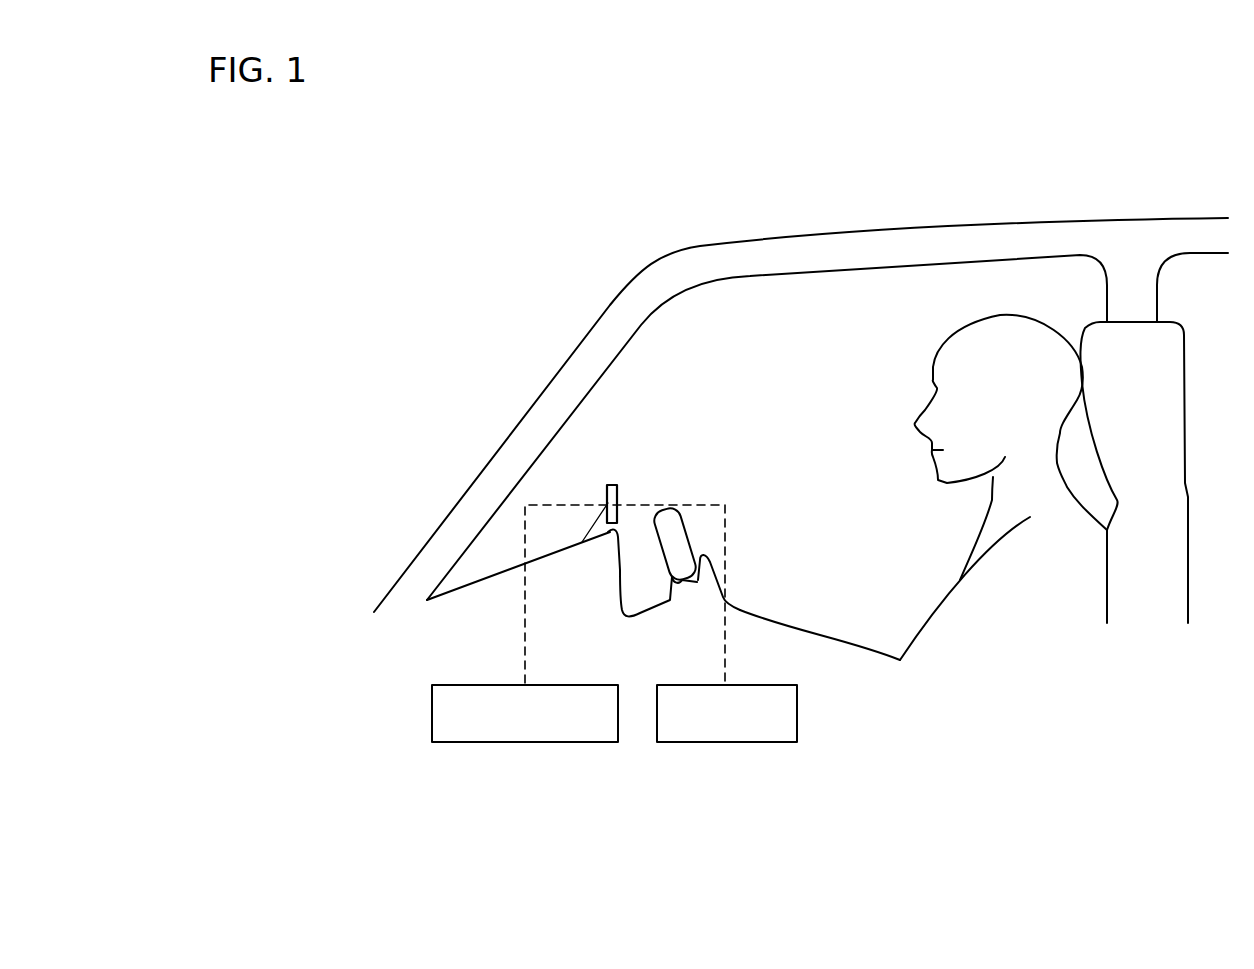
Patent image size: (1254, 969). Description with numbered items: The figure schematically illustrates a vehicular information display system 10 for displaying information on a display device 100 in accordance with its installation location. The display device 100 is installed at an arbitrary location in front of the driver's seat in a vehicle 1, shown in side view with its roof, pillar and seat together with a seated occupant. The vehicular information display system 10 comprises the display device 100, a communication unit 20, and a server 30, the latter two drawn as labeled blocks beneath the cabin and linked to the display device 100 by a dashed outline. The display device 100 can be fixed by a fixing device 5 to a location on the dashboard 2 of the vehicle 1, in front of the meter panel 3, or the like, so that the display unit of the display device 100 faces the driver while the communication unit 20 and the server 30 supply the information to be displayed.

The vehicle 1 is at (688, 248).
The vehicular information display system 10 is at (388, 268).
The dashboard 2 is at (550, 547).
The fixing device 5 is at (598, 520).
The display device 100 is at (618, 480).
The meter panel 3 is at (623, 577).
The communication unit 20 is at (497, 745).
The server 30 is at (722, 745).